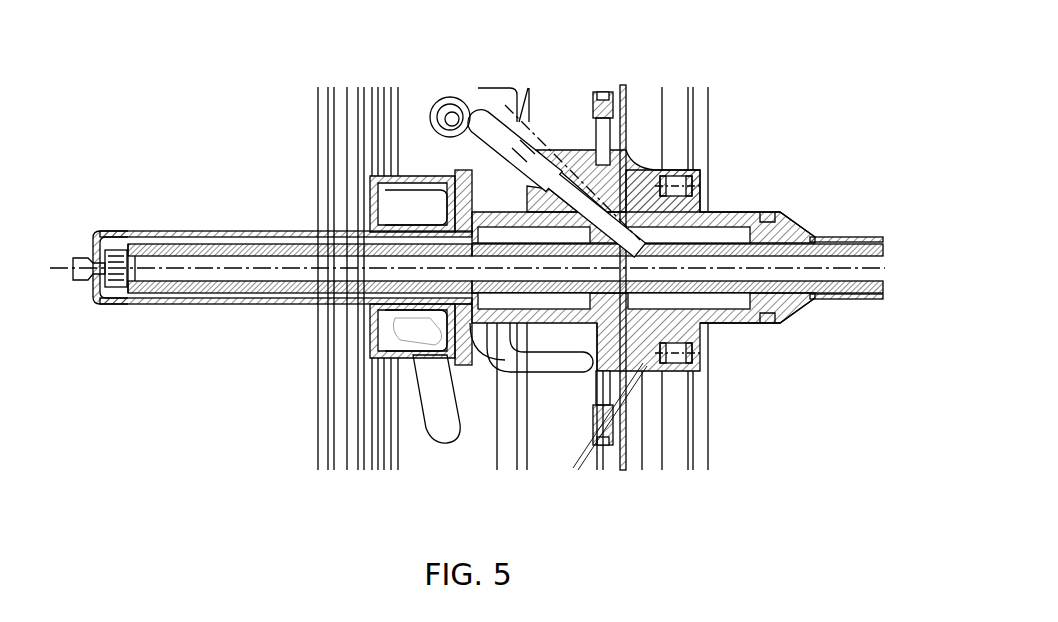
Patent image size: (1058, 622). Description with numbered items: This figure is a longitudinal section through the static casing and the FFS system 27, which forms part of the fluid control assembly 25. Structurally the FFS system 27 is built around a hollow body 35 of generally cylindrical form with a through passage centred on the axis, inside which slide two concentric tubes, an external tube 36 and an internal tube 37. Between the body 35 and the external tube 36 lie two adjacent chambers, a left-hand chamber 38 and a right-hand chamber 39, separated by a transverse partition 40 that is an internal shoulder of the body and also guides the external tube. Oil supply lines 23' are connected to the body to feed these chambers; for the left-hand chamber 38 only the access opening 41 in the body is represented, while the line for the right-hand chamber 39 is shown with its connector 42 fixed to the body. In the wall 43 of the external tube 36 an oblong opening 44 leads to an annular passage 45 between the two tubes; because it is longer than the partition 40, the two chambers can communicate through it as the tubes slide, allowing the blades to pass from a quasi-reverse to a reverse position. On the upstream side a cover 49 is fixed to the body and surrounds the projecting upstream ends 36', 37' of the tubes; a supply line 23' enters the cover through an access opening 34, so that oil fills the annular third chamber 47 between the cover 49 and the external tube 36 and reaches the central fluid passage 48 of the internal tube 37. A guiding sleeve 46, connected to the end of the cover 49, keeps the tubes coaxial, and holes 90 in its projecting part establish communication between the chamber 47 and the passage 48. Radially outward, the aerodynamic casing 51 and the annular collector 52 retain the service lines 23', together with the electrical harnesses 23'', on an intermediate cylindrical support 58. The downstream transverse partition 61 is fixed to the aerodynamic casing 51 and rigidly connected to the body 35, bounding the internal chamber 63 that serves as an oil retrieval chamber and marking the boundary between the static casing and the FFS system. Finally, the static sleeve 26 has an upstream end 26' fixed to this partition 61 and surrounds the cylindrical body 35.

The fluid control assembly 25 is at (770, 463).
The sleeve 26 is at (846, 193).
The upstream end of the sleeve 26' is at (757, 226).
The FFS system 27 is at (652, 372).
The access opening 34 is at (415, 303).
The hollow body 35 is at (680, 205).
The external tube 36 is at (677, 199).
The upstream end of the external tube 36' is at (300, 212).
The internal tube 37 is at (831, 339).
The upstream end of the internal tube 37' is at (264, 240).
The left-hand chamber 38 is at (560, 325).
The right-hand chamber 39 is at (718, 307).
The transverse partition 40 is at (612, 330).
The opening 41 is at (553, 235).
The connector 42 is at (537, 145).
The wall of the external tube 43 is at (410, 246).
The oblong opening 44 is at (510, 243).
The annular passage 45 is at (842, 287).
The sleeve 46 is at (140, 250).
The third chamber 47 is at (192, 302).
The central fluid passage 48 is at (240, 291).
The cover 49 is at (134, 306).
The aerodynamic casing 51 is at (318, 135).
The annular collector 52 is at (347, 113).
The intermediate cylindrical support 58 is at (413, 103).
The downstream transverse partition 61 is at (592, 92).
The internal chamber 63 is at (419, 85).
The holes 90 is at (108, 288).
The supply line 23' is at (529, 268).
The harnesses 23'' is at (531, 411).